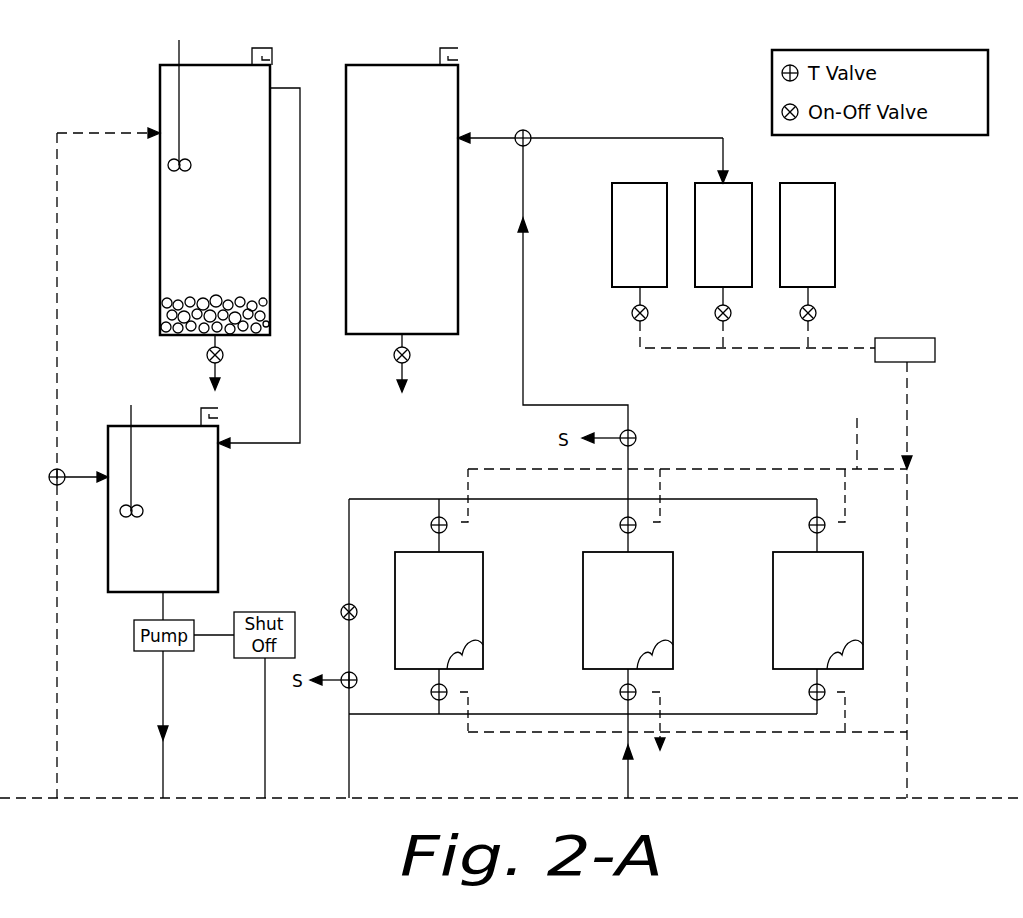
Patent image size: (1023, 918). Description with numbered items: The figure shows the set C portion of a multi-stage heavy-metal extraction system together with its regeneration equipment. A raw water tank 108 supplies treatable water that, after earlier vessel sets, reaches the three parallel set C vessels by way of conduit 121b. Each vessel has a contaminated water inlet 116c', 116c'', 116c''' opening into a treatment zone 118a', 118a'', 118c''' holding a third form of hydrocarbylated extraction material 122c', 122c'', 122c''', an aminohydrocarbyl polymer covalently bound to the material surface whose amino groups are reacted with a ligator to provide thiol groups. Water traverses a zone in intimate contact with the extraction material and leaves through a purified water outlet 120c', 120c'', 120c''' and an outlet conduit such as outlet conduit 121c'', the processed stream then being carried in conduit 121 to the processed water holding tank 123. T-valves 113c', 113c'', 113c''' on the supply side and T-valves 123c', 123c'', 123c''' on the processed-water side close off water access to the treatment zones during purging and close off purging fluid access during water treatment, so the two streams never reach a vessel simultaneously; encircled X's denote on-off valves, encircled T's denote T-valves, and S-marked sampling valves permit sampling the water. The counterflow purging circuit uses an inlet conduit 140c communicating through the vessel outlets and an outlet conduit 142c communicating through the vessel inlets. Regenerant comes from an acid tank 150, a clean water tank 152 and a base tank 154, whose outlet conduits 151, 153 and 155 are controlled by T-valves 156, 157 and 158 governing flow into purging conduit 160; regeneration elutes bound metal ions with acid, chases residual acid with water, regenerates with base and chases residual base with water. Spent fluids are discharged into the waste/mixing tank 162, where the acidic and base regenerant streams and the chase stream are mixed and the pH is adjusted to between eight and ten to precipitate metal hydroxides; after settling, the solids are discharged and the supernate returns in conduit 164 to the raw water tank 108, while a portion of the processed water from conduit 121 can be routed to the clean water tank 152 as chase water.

The mixing tank 162 is at (160, 249).
The conduit 164 is at (300, 428).
The raw water tank 108 is at (218, 562).
The processed water holding tank 123 is at (458, 117).
The conduit 121 is at (523, 317).
The acid tank 150 is at (612, 210).
The outlet conduit 151 is at (630, 300).
The clean water tank 152 is at (695, 200).
The outlet conduit 153 is at (715, 296).
The base tank 154 is at (835, 212).
The outlet conduit 155 is at (780, 305).
The T-valve 156 is at (632, 313).
The T-valve 157 is at (730, 322).
The T-valve 158 is at (818, 318).
The purging conduit 160 is at (908, 437).
The purging circuit inlet conduit 140c is at (687, 432).
The T-valve 123c' is at (418, 499).
The T-valve 123c'' is at (563, 482).
The T-valve 123c''' is at (792, 491).
The outlet conduit 121c'' is at (675, 458).
The purified water outlet 120c' is at (486, 525).
The purified water outlet 120c'' is at (685, 528).
The purified water outlet 120c''' is at (896, 525).
The hydrocarbylated extraction material 122c' is at (439, 610).
The hydrocarbylated extraction material 122c'' is at (628, 610).
The hydrocarbylated extraction material 122c''' is at (818, 610).
The treatment zone 118a' is at (495, 634).
The treatment zone 118a'' is at (688, 633).
The treatment zone 118c''' is at (901, 618).
The contaminated water inlet 116c' is at (495, 661).
The contaminated water inlet 116c'' is at (685, 663).
The contaminated water inlet 116c''' is at (900, 662).
The T-valve 113c' is at (414, 703).
The T-valve 113c'' is at (603, 712).
The T-valve 113c''' is at (786, 700).
The purging circuit outlet conduit 142c is at (878, 728).
The conduit 121b is at (632, 783).